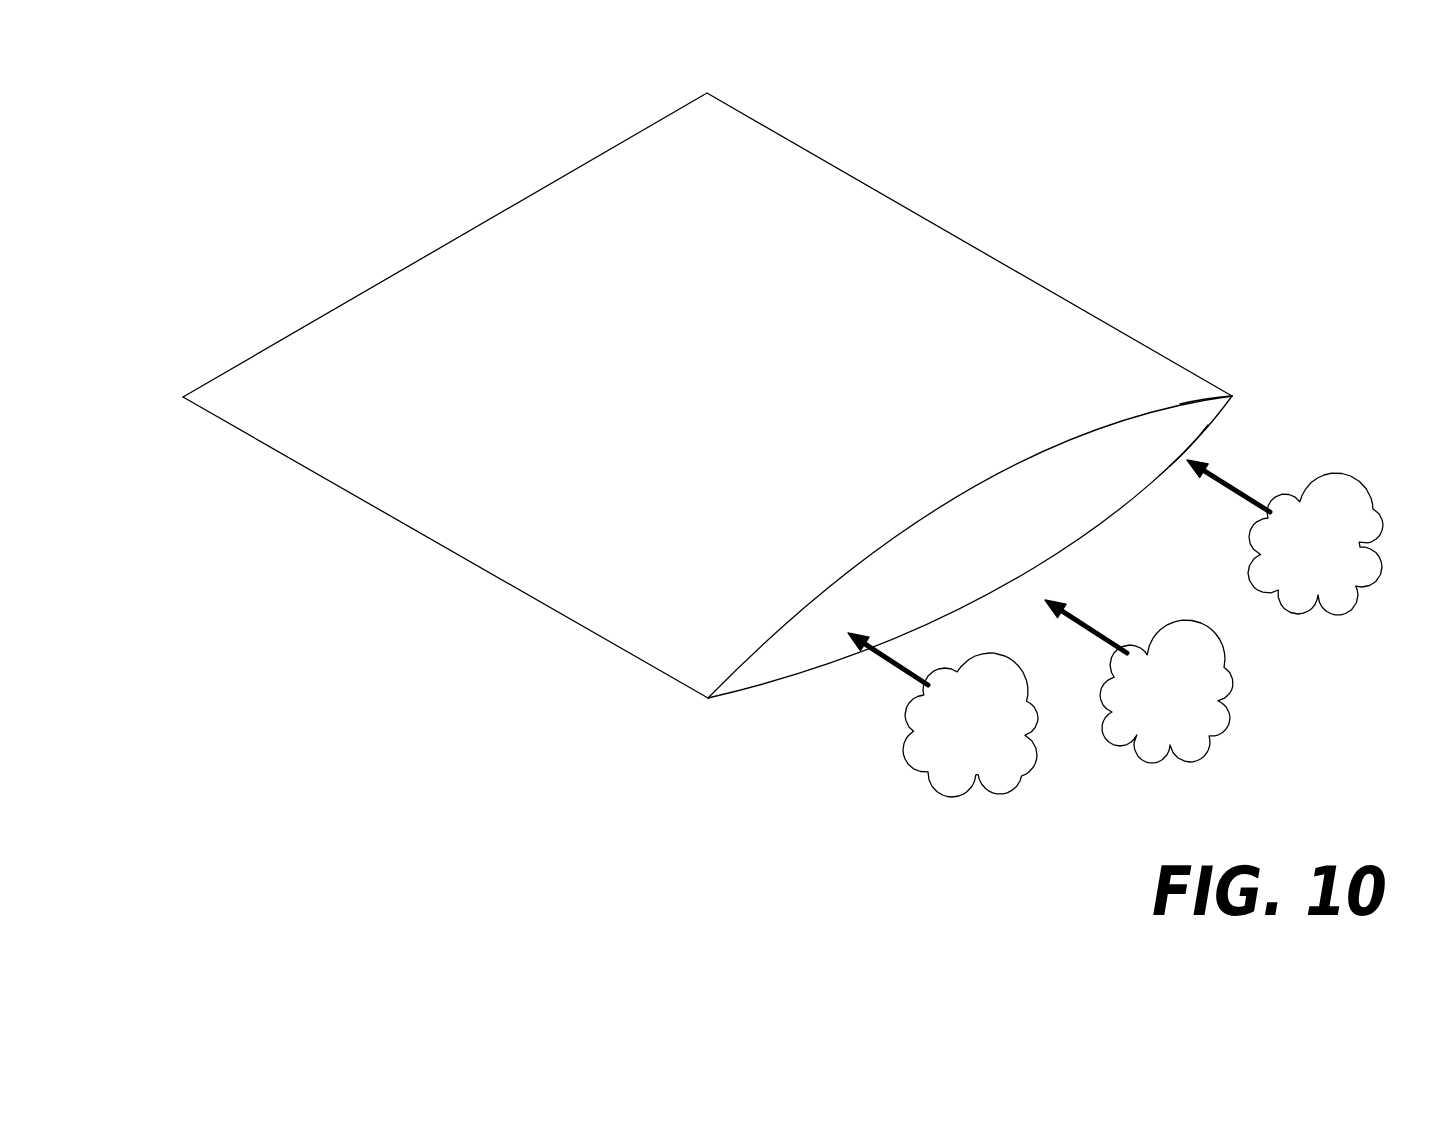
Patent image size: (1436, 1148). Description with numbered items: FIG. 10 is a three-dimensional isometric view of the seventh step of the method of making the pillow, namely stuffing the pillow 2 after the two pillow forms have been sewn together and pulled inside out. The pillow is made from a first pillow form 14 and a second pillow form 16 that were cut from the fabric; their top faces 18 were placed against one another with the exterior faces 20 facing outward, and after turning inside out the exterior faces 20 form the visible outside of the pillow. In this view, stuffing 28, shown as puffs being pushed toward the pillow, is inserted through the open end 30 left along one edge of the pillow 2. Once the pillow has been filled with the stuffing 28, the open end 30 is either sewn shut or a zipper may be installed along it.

The bag 2 is at (259, 157).
The first pillow form 14 is at (1080, 538).
The second pillow form 16 is at (1215, 402).
The top faces 18 is at (436, 305).
The exterior faces 20 is at (957, 591).
The stuffing 28 is at (1018, 758).
The open end 30 is at (1198, 441).